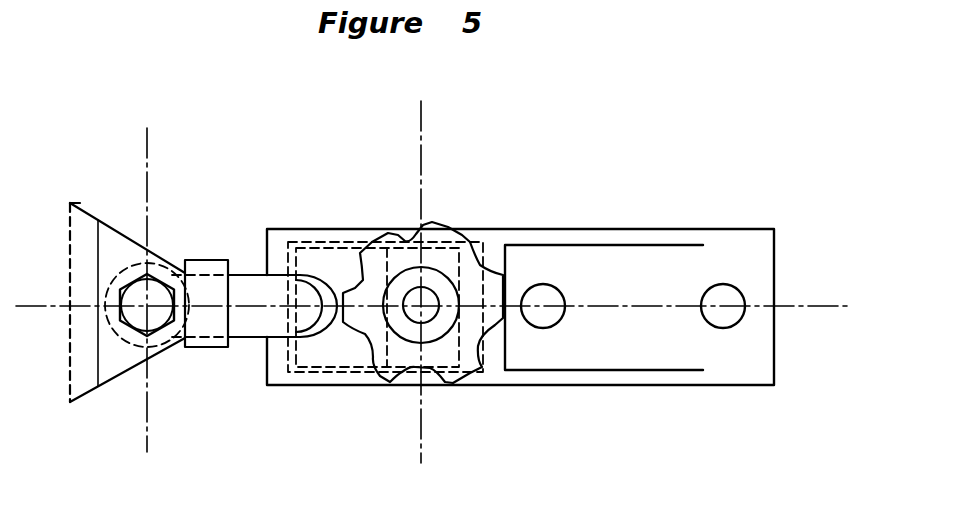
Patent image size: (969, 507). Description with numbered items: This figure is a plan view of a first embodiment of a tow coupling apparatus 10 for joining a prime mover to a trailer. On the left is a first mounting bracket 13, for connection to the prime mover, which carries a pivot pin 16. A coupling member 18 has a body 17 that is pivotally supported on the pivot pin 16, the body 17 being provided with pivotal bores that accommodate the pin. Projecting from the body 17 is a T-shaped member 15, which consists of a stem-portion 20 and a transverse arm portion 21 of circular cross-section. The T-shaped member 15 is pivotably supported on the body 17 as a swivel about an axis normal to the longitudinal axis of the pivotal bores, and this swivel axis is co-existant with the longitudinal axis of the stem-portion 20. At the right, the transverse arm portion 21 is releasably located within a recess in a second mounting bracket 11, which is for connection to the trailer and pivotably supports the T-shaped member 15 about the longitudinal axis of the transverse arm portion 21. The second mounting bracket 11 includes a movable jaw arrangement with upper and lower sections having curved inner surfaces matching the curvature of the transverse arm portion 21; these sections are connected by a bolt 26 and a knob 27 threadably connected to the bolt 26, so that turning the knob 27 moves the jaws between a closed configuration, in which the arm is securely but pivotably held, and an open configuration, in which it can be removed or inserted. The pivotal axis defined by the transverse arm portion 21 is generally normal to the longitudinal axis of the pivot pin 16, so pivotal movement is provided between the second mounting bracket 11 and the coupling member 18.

The tow coupling apparatus 10 is at (383, 179).
The second mounting bracket 11 is at (598, 230).
The first mounting bracket 13 is at (87, 225).
The T-shaped member 15 is at (253, 349).
The pivot pin 16 is at (128, 300).
The body 17 is at (207, 328).
The coupling member 18 is at (188, 249).
The stem-portion 20 is at (258, 292).
The transverse arm portion 21 is at (345, 360).
The bolt 26 is at (415, 315).
The knob 27 is at (480, 240).